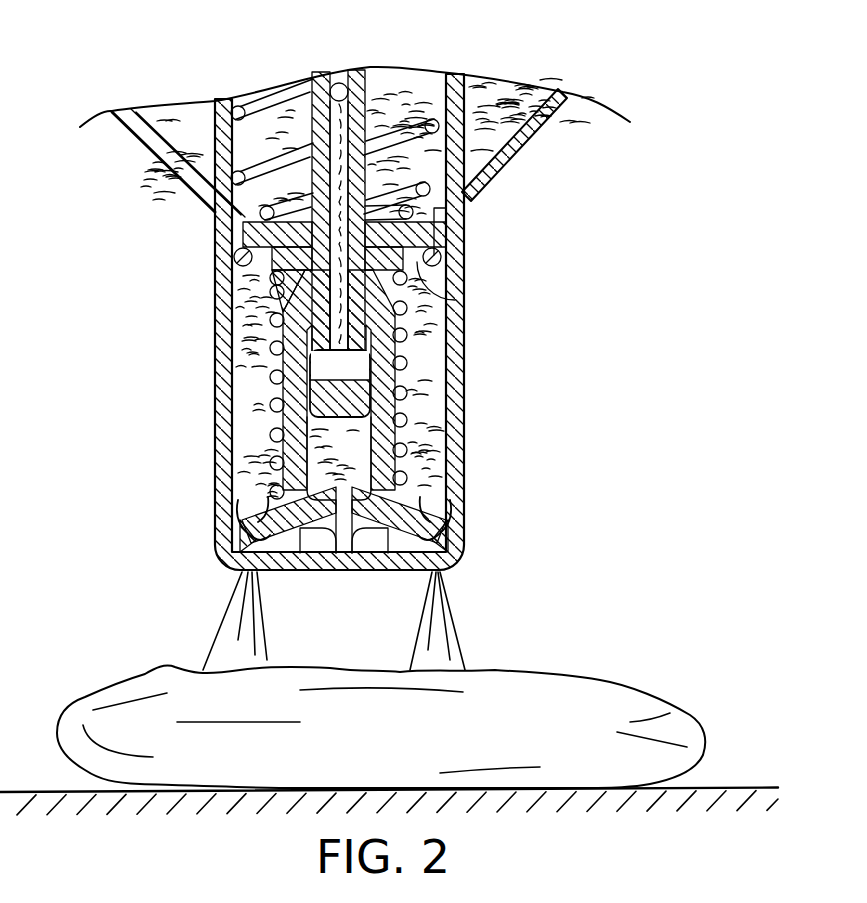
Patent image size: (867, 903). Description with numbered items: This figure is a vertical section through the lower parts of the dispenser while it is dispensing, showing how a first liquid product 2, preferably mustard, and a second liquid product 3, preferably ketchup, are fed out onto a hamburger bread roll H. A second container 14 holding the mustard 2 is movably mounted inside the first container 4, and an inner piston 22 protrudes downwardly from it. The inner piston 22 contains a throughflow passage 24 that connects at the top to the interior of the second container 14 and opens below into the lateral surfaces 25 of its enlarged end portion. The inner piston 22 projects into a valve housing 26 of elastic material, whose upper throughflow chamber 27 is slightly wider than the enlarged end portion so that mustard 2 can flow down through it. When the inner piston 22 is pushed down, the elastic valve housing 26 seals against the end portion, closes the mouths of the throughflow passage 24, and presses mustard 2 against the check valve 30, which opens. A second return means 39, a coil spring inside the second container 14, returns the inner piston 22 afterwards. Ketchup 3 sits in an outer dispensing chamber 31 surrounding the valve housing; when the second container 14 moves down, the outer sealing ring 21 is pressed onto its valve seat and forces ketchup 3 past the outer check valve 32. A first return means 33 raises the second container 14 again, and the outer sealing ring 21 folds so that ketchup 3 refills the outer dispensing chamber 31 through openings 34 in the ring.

The first liquid product 2 is at (407, 90).
The second liquid product 3 is at (503, 107).
The first container 4 is at (522, 147).
The second container 14 is at (220, 124).
The outer sealing ring 21 is at (443, 259).
The inner piston 22 is at (477, 193).
The throughflow passage 24 is at (315, 125).
The lateral surfaces 25 is at (233, 477).
The valve housing 26 is at (400, 463).
The throughflow chamber 27 is at (420, 373).
The check valve 30 is at (468, 537).
The outer dispensing chamber 31 is at (232, 386).
The outer check valve 32 is at (233, 517).
The first return means 33 is at (233, 355).
The openings 34 is at (455, 300).
The second return means 39 is at (240, 163).
The hamburger bread roll H is at (613, 703).